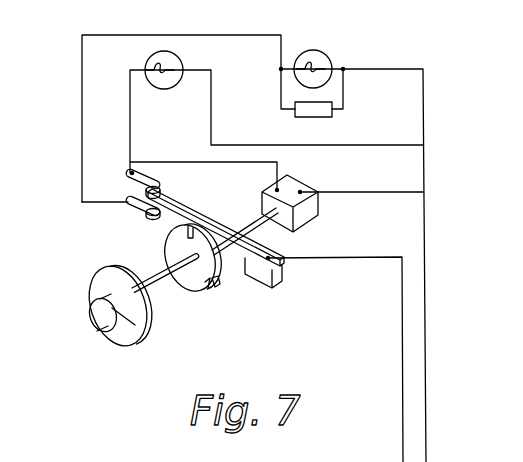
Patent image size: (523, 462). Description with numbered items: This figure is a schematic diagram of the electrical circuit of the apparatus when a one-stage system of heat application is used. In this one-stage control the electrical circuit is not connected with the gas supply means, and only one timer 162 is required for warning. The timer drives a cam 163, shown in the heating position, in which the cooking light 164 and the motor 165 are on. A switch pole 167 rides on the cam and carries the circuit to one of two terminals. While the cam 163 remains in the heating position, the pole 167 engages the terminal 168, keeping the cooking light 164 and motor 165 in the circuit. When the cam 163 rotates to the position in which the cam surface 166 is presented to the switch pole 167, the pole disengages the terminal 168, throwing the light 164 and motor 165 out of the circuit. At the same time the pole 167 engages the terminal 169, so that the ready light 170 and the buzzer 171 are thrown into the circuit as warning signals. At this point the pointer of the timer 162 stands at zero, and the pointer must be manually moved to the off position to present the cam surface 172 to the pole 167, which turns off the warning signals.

The timer 162 is at (84, 292).
The cam 163 is at (177, 250).
The cooking light 164 is at (170, 54).
The motor 165 is at (314, 216).
The cam surface 166 is at (217, 284).
The switch pole 167 is at (207, 222).
The terminal 168 is at (161, 184).
The terminal 169 is at (145, 216).
The ready light 170 is at (318, 52).
The buzzer 171 is at (321, 118).
The cam surface 172 is at (204, 296).